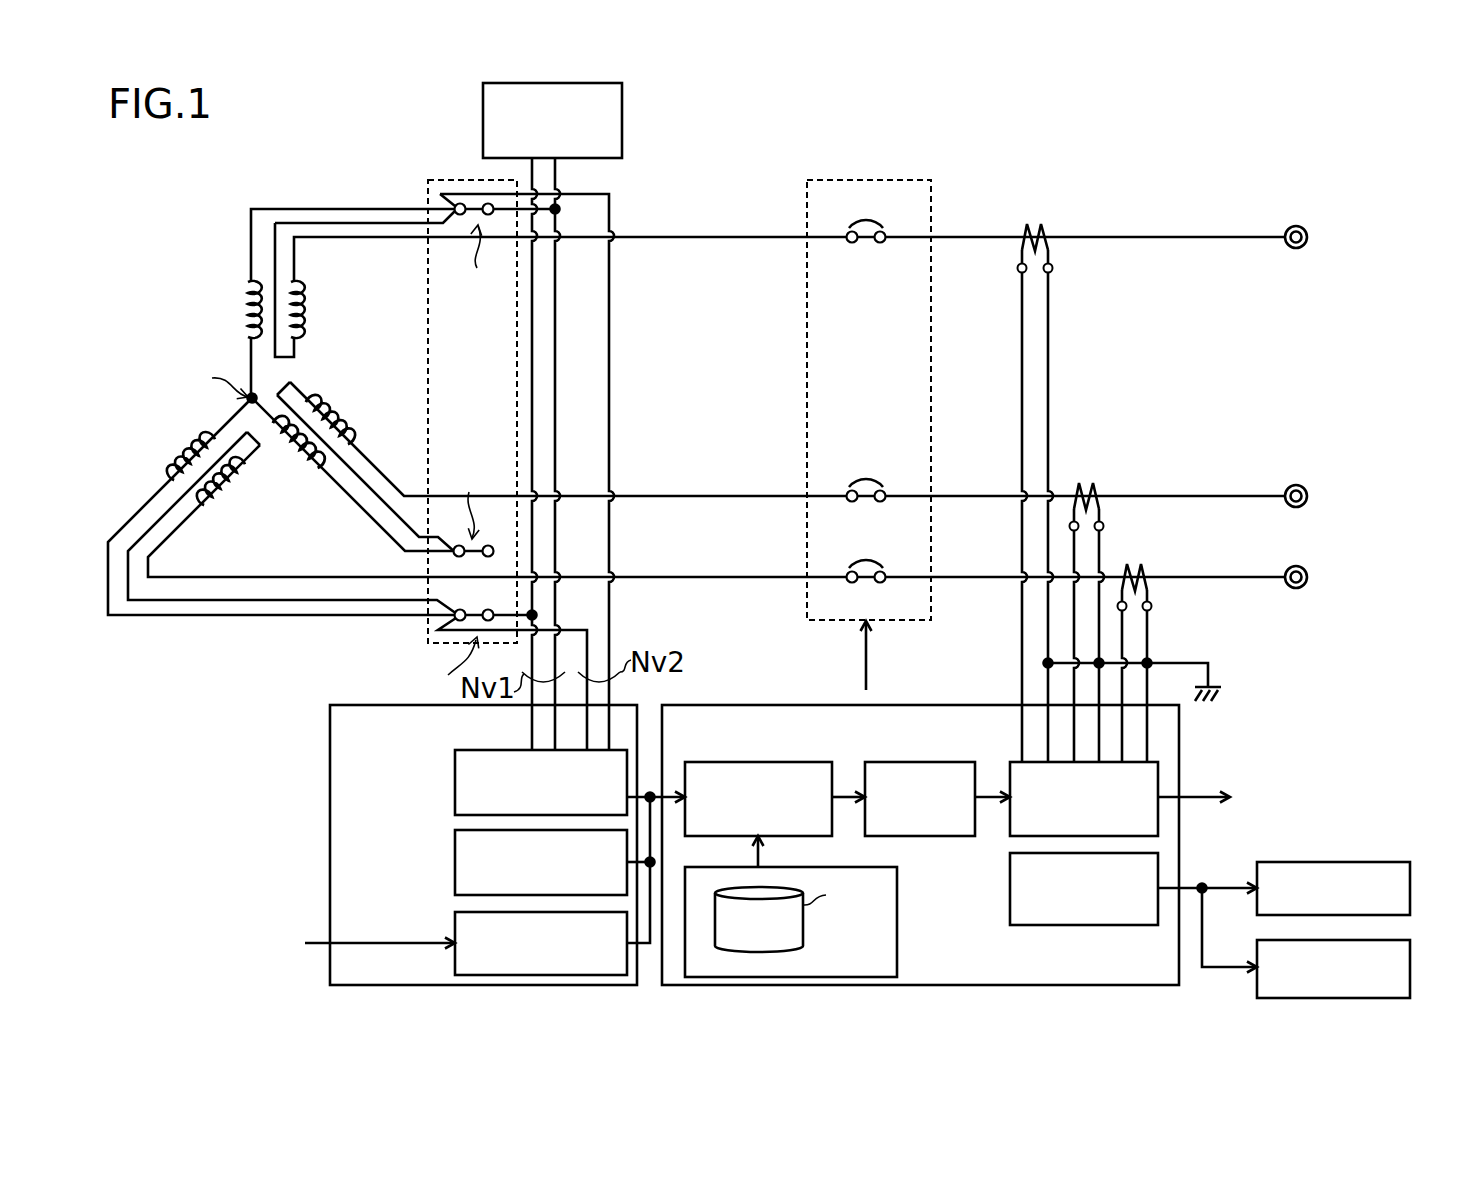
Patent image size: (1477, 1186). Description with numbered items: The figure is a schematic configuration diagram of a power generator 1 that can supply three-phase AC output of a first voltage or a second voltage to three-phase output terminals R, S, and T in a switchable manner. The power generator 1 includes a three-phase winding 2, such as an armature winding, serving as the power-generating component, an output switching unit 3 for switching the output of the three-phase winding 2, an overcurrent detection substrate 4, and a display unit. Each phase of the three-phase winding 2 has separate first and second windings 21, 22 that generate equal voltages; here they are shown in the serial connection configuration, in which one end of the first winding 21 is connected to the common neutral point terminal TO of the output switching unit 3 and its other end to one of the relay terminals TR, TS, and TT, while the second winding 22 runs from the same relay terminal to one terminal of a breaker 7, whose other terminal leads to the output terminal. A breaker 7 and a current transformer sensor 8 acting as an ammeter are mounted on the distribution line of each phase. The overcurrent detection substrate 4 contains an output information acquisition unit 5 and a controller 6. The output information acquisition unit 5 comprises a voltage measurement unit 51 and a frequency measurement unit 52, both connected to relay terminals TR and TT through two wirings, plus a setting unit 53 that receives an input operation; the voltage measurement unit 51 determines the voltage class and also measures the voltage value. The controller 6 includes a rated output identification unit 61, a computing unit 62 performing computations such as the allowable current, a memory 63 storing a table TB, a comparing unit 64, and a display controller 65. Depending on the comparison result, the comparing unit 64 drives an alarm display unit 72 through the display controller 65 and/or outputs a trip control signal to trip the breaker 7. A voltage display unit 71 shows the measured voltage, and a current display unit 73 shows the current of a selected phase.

The power generator 1 is at (1231, 156).
The three-phase winding 2 is at (222, 212).
The first winding 21 is at (240, 312).
The second winding 22 is at (305, 312).
The output switching unit 3 is at (444, 180).
The overcurrent detection substrate 4 is at (1220, 731).
The output information acquisition unit 5 is at (365, 705).
The voltage measurement unit 51 is at (454, 792).
The frequency measurement unit 52 is at (454, 854).
The setting unit 53 is at (455, 924).
The controller 6 is at (725, 705).
The rated output identification unit 61 is at (810, 762).
The computing unit 62 is at (920, 762).
The memory 63 is at (897, 918).
The comparing unit 64 is at (1008, 828).
The display controller 65 is at (1073, 925).
The breaker 7 is at (866, 252).
The current transformer (CT) sensor 8 is at (1051, 223).
The voltage display unit 71 is at (622, 118).
The alarm display unit 72 is at (1257, 868).
The current display unit 73 is at (1257, 948).